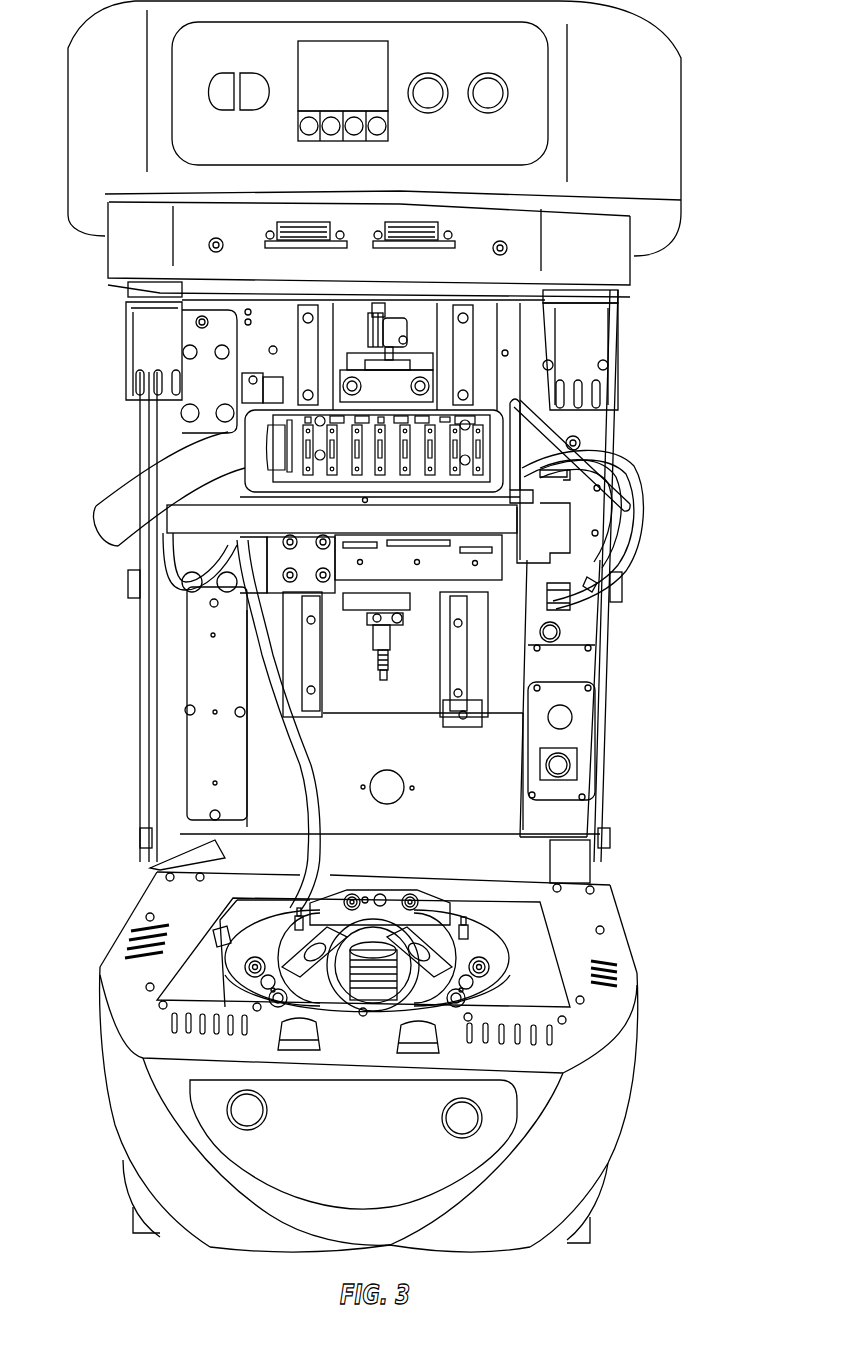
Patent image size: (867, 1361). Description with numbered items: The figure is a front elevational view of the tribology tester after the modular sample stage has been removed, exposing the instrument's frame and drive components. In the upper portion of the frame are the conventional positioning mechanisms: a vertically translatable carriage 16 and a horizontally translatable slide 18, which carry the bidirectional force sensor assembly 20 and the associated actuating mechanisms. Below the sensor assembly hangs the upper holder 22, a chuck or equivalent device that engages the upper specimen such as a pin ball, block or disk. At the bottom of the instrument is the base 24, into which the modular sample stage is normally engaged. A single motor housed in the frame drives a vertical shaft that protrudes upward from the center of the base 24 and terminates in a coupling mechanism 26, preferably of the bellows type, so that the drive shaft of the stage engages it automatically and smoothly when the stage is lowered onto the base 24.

The vertically translatable carriage 16 is at (483, 503).
The horizontally translatable slide 18 is at (477, 590).
The bidirectional force sensor assembly 20 is at (187, 512).
The upper holder 22 is at (373, 635).
The base 24 is at (500, 943).
The coupling mechanism 26 is at (382, 957).